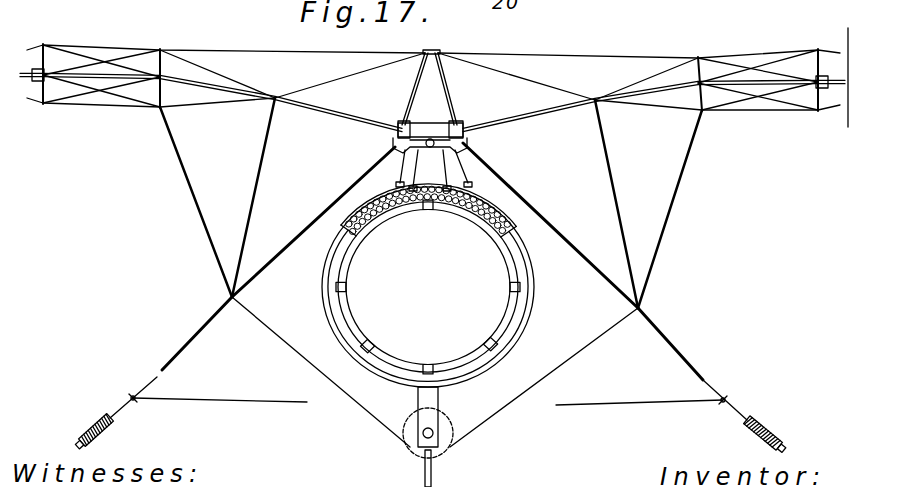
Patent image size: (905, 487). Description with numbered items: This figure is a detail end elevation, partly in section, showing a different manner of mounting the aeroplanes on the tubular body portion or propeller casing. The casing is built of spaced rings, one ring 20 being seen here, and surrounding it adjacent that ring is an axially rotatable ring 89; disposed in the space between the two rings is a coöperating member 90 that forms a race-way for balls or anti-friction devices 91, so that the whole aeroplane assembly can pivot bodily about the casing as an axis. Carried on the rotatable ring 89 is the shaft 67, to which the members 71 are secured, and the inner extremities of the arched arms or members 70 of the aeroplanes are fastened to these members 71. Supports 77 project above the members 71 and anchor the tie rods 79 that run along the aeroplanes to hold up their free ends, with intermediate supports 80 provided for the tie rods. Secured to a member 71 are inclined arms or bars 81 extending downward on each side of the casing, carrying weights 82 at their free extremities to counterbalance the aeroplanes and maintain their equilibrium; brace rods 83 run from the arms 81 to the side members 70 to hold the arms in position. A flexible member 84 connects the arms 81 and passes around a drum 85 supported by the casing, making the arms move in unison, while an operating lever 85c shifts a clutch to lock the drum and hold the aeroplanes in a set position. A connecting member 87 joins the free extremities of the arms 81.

The ring 20 is at (508, 274).
The shaft 67 is at (390, 147).
The arm 70 is at (316, 108).
The member 71 is at (443, 132).
The support 77 is at (445, 90).
The tie rod 79 is at (252, 50).
The intermediate support 80 is at (45, 72).
The arm 81 is at (292, 237).
The weight 82 is at (110, 433).
The brace rod 83 is at (257, 183).
The flexible member 84 is at (618, 322).
The drum 85 is at (448, 427).
The operating lever 85c is at (423, 477).
The connecting member 87 is at (608, 407).
The axially rotatable ring 89 is at (497, 203).
The coöperating member 90 is at (522, 267).
The ball 91 is at (382, 190).